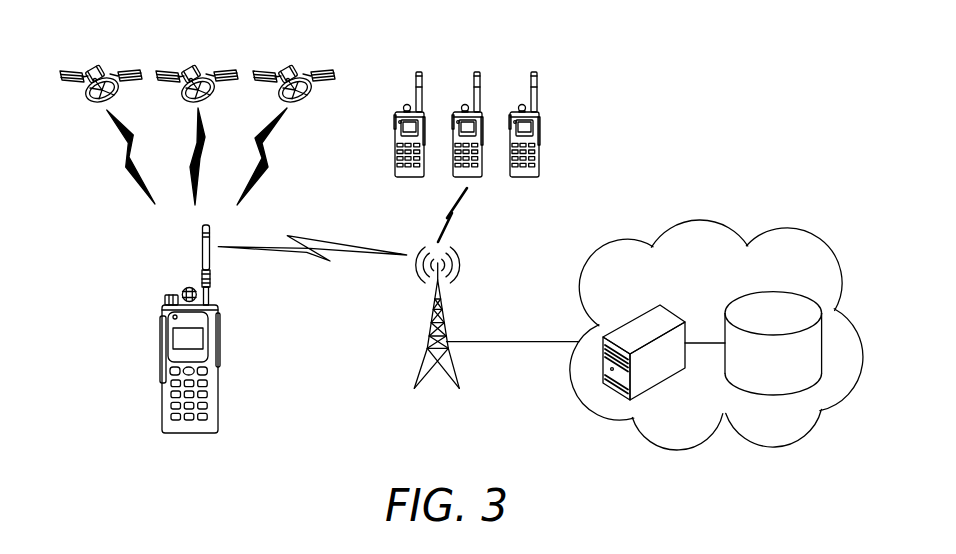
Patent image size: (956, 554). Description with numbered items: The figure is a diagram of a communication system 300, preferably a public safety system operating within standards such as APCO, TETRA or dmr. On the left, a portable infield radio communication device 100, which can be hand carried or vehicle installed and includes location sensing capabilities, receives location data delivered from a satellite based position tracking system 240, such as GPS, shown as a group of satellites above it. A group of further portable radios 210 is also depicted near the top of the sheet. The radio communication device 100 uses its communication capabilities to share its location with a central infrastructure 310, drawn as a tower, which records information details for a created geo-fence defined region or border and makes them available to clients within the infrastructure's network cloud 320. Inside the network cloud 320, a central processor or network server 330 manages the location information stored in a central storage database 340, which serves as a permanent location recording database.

The radio communication device 100 is at (160, 357).
The group of portable radios 210 is at (564, 94).
The satellite based position tracking system 240 is at (345, 50).
The communication system 300 is at (780, 482).
The central infrastructure 310 is at (424, 354).
The network cloud 320 is at (768, 229).
The network server 330 is at (675, 308).
The central storage database 340 is at (775, 292).